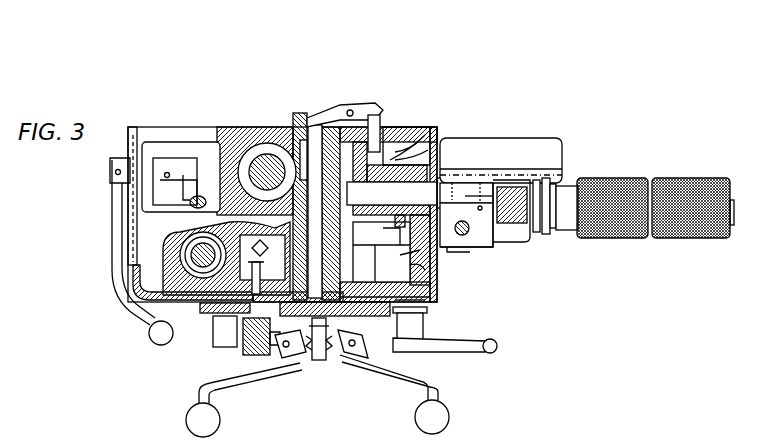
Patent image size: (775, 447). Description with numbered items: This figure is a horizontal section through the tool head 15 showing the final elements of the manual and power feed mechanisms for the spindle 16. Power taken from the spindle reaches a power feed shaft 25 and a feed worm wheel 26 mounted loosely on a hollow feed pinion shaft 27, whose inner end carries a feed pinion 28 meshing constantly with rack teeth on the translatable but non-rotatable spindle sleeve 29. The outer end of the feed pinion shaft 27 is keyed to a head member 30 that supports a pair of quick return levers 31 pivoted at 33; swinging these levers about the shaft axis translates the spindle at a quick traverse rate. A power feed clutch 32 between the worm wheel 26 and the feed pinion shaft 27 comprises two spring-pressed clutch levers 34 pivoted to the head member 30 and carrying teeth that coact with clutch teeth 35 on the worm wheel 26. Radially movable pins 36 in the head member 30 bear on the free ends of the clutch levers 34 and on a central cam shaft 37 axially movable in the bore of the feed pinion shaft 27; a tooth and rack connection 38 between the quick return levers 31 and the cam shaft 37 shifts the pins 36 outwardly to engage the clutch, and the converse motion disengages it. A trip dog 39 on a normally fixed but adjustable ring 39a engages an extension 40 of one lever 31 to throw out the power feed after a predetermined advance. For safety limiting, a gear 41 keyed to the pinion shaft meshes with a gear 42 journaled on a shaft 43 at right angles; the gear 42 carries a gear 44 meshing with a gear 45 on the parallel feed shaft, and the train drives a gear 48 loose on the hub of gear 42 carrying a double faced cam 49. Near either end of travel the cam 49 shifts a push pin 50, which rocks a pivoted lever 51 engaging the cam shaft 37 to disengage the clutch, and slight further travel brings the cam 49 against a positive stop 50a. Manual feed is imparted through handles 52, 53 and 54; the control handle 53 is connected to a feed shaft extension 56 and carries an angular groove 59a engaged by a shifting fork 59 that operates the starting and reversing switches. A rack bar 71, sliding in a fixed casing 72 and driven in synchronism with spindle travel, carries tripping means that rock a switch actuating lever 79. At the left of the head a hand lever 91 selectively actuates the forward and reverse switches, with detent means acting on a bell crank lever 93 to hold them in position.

The tool head 15 is at (138, 283).
The spindle 16 is at (258, 167).
The power feed shaft 25 is at (198, 252).
The feed worm wheel 26 is at (412, 270).
The feed pinion shaft 27 is at (300, 150).
The feed pinion 28 is at (266, 150).
The spindle sleeve 29 is at (256, 152).
The head member 30 is at (283, 365).
The quick return levers 31 is at (199, 400).
The power feed clutch 32 is at (418, 311).
The pivot 33 is at (352, 360).
The clutch levers 34 is at (243, 328).
The clutch teeth 35 is at (420, 297).
The pins 36 is at (303, 362).
The cam shaft 37 is at (322, 362).
The tooth and rack connection 38 is at (312, 365).
The trip dog 39 is at (245, 352).
The adjustable ring 39a is at (420, 352).
The extension 40 is at (276, 372).
The gear 41 is at (268, 245).
The gear 42 is at (381, 248).
The shaft 43 is at (396, 193).
The gear 44 is at (440, 148).
The gear 45 is at (420, 262).
The driven gear 48 is at (400, 160).
The double faced cam 49 is at (400, 152).
The push pin 50 is at (380, 118).
The positive stop 50a is at (400, 140).
The pivoted lever 51 is at (345, 108).
The handle 52 is at (520, 218).
The control handle 53 is at (608, 238).
The handle 54 is at (680, 238).
The feed shaft extension 56 is at (734, 225).
The shifting fork 59 is at (560, 188).
The angular groove 59a is at (547, 228).
The rack bar 71 is at (470, 235).
The casing 72 is at (488, 230).
The switch actuating lever 79 is at (452, 195).
The hand lever 91 is at (140, 316).
The bell crank lever 93 is at (190, 202).